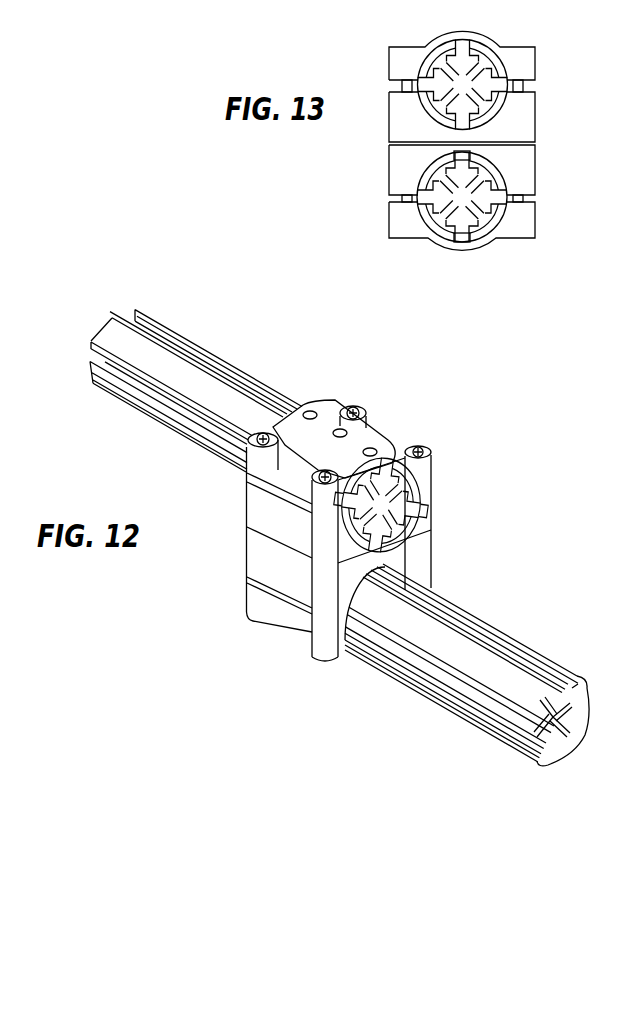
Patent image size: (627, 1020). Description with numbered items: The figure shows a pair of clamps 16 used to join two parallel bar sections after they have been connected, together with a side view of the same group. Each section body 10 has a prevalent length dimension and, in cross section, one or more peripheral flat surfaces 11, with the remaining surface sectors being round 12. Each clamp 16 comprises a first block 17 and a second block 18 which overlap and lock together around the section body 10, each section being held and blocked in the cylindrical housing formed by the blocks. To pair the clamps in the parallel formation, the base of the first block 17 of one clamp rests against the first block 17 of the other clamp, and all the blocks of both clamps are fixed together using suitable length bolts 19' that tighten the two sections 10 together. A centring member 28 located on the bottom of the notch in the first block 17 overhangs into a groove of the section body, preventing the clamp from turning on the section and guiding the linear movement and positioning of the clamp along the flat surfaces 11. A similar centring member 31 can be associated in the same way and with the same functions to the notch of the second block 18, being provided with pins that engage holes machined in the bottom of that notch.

In FIG. 12, the section body 10 is at (236, 362).
In FIG. 12, the flat surfaces 11 is at (138, 402).
In FIG. 12, the round surface sectors 12 is at (195, 387).
In FIG. 12, the clamp 16 is at (396, 437).
In FIG. 13, the first block 17 is at (537, 118).
In FIG. 13, the second block 18 is at (536, 62).
In FIG. 12, the suitable length bolts 19' is at (345, 413).
In FIG. 13, the centring member 28 is at (455, 158).
In FIG. 12, the centring member 28 is at (410, 537).
In FIG. 13, the centring member 31 is at (462, 238).